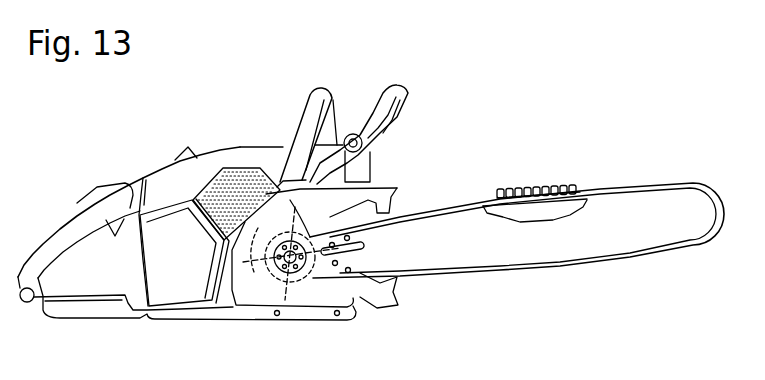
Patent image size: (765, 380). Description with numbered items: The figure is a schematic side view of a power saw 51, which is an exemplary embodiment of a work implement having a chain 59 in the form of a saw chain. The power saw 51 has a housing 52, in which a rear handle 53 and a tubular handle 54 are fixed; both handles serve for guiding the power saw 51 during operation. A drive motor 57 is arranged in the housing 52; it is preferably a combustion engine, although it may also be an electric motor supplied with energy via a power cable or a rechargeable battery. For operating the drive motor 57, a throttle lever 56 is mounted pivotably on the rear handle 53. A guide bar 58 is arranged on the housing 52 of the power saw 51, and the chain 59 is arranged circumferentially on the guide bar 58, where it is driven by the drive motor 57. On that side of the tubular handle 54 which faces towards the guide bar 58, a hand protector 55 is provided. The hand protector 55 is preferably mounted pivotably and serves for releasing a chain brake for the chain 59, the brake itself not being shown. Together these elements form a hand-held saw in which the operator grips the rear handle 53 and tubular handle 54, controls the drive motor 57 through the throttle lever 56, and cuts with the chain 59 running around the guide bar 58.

The power saw 51 is at (485, 112).
The housing 52 is at (205, 300).
The rear handle 53 is at (75, 232).
The tubular handle 54 is at (308, 117).
The hand protector 55 is at (393, 88).
The throttle lever 56 is at (117, 222).
The drive motor 57 is at (236, 192).
The guide bar 58 is at (628, 207).
The chain 59 is at (557, 187).